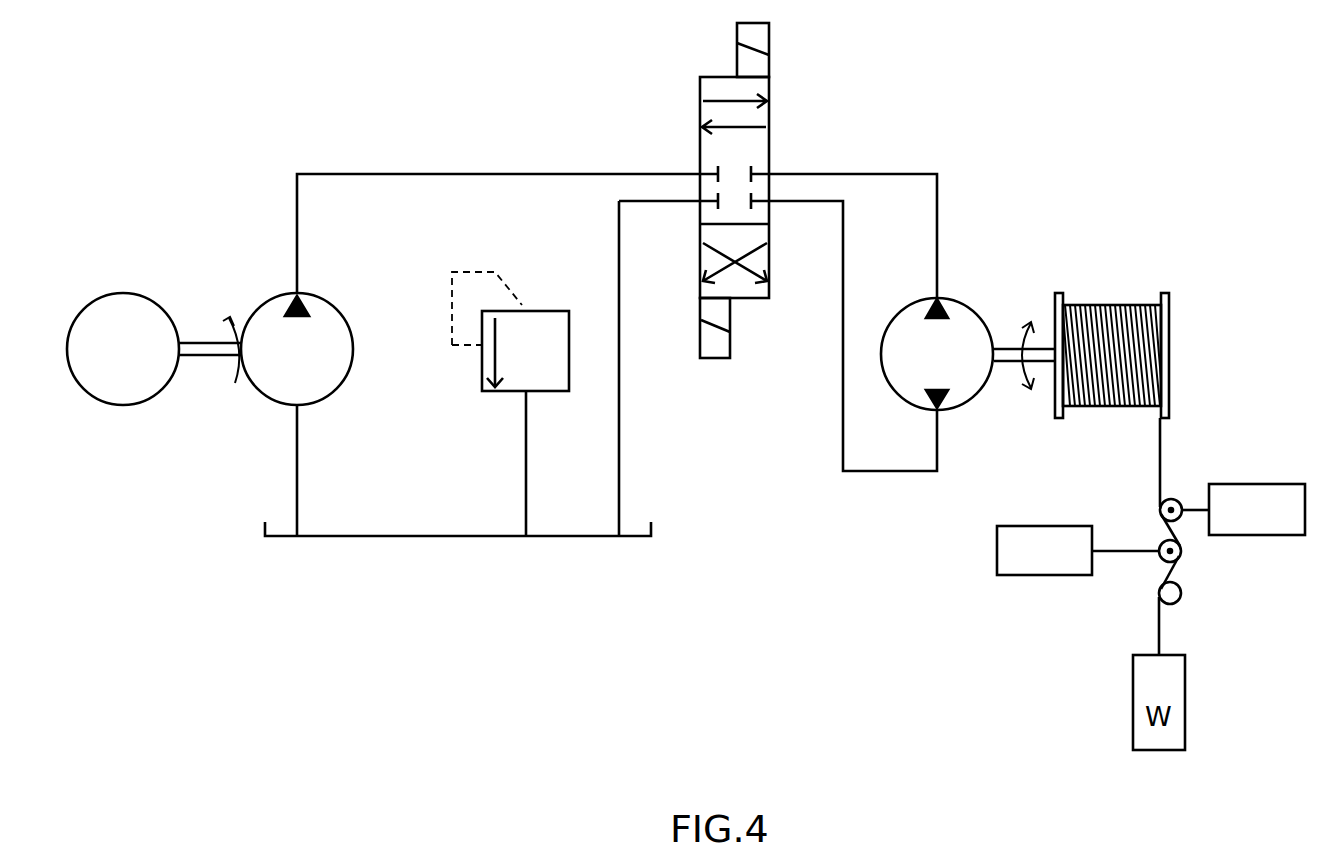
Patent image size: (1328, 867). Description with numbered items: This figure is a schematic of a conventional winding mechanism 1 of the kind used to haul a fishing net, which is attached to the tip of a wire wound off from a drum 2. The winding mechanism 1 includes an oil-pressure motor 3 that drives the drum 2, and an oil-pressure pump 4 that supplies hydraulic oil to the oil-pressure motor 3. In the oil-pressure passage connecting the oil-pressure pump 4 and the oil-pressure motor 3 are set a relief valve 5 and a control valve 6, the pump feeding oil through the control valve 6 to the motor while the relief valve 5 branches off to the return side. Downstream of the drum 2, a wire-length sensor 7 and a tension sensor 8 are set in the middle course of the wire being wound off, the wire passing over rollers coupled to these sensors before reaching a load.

The winding mechanism 1 is at (472, 652).
The drum 2 is at (1133, 305).
The oil-pressure motor 3 is at (963, 306).
The oil-pressure pump 4 is at (271, 300).
The relief valve 5 is at (555, 311).
The control valve 6 is at (770, 113).
The wire-length sensor 7 is at (1267, 484).
The tension sensor 8 is at (1043, 575).